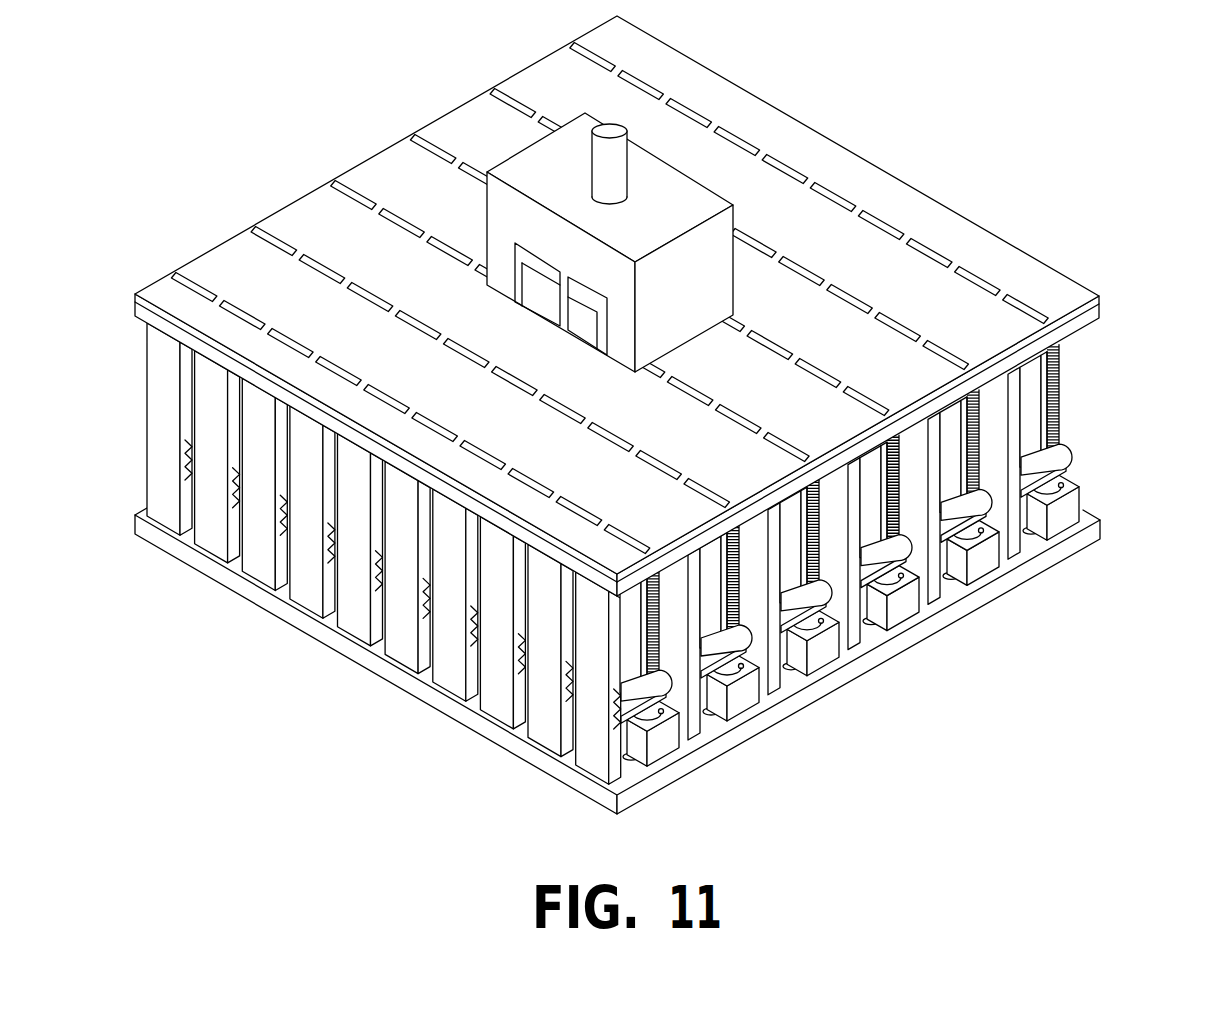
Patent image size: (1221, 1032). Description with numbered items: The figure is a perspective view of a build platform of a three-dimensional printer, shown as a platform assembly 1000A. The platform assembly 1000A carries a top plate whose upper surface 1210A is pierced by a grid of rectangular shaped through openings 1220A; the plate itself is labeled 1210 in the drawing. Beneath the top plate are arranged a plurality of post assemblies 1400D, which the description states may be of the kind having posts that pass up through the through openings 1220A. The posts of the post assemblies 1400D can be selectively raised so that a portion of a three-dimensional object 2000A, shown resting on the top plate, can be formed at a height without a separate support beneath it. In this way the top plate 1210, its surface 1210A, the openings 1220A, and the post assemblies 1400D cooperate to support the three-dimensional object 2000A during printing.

The platform assembly 1000A is at (653, 415).
The top plate 1210 is at (653, 306).
The upper surface of top plate 1210A is at (631, 295).
The rectangular shaped through openings 1220A is at (987, 280).
The 3D object 2000A is at (697, 180).
The post assemblies 1400D is at (957, 657).